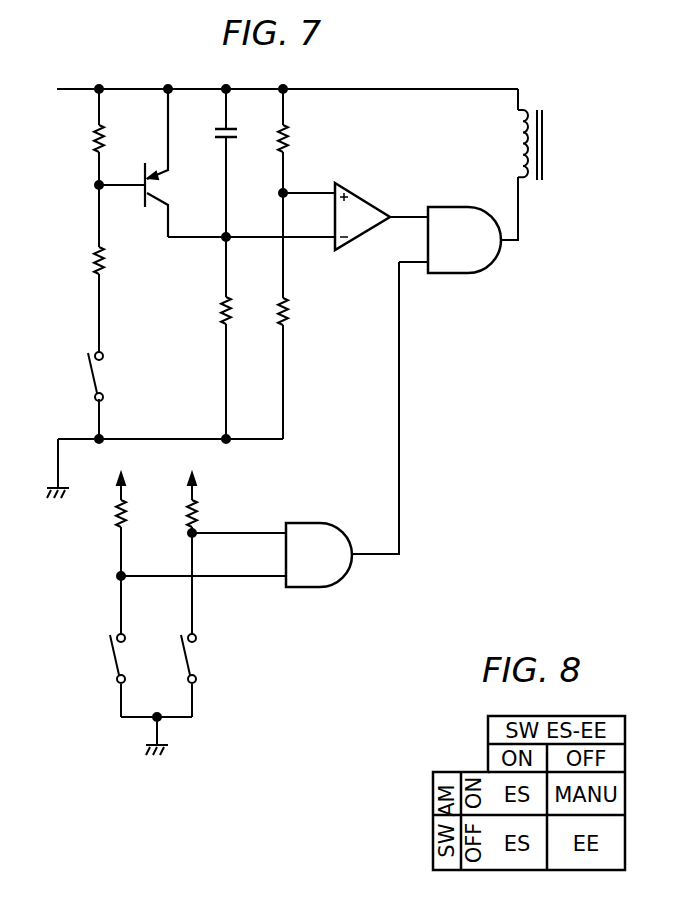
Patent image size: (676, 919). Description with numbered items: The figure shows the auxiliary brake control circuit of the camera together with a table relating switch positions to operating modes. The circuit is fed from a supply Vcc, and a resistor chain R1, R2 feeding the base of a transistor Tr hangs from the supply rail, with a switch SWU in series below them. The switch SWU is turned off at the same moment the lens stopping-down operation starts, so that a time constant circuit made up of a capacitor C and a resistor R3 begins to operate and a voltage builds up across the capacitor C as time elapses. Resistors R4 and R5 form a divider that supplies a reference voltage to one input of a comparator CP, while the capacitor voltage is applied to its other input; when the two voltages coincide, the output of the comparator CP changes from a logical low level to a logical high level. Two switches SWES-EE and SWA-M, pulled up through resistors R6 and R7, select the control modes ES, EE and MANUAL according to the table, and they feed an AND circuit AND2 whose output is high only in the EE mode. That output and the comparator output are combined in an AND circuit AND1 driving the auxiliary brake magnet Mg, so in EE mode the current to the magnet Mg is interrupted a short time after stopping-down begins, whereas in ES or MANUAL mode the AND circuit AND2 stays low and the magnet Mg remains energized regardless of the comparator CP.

The supply voltage Vcc is at (266, 90).
The resistor R1 is at (110, 142).
The resistor R2 is at (110, 261).
The resistor R3 is at (237, 312).
The resistor R4 is at (295, 140).
The resistor R5 is at (295, 312).
The resistor R6 is at (133, 501).
The resistor R7 is at (204, 501).
The capacitor C is at (234, 135).
The transistor Tr is at (138, 163).
The comparator CP is at (362, 205).
The AND circuit AND1 is at (459, 227).
The AND circuit AND2 is at (313, 542).
The auxiliary brake magnet Mg is at (511, 145).
The switch SWU is at (119, 376).
The switch SWES-EE is at (80, 660).
The switch SWA-M is at (214, 661).